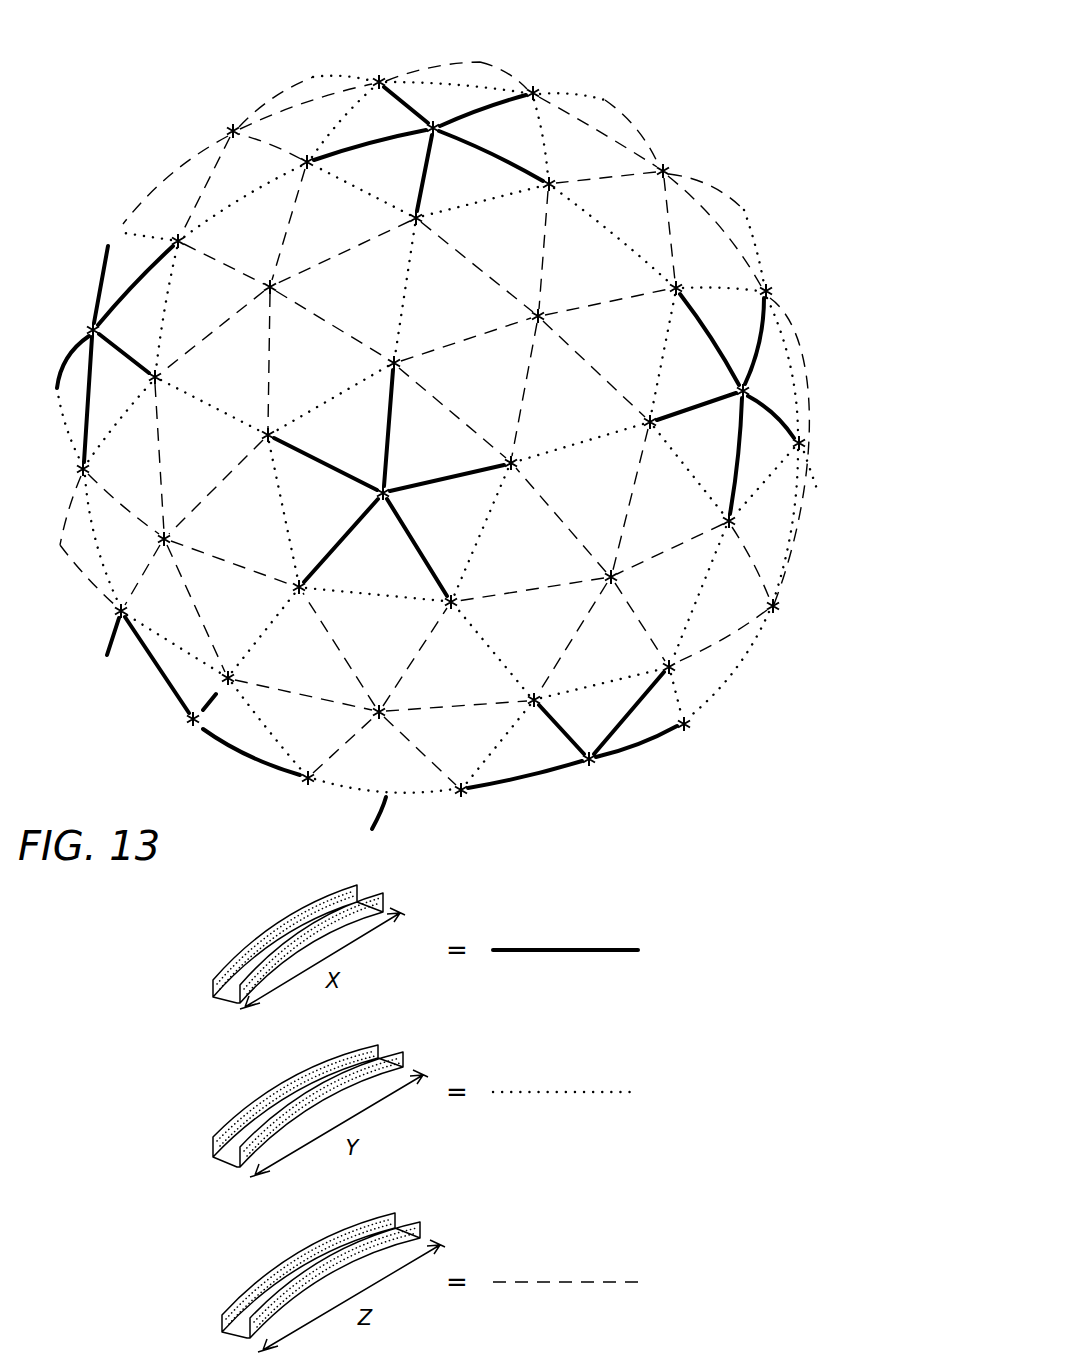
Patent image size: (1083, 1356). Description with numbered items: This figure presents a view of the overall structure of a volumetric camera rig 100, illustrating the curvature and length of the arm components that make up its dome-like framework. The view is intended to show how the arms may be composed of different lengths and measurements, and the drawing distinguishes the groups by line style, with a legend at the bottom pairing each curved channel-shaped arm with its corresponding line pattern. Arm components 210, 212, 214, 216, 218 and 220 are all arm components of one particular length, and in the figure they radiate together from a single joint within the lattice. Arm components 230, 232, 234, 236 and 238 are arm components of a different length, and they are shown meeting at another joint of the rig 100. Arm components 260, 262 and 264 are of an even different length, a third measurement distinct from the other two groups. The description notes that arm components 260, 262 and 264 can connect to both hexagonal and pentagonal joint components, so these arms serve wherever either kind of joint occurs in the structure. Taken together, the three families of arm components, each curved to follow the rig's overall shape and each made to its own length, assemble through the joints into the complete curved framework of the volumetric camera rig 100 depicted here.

The volumetric camera rig 100 is at (719, 64).
The arm component 210 is at (284, 236).
The arm component 212 is at (228, 263).
The arm component 214 is at (208, 337).
The arm component 216 is at (267, 337).
The arm component 218 is at (313, 318).
The arm component 220 is at (309, 266).
The arm component 230 is at (387, 447).
The arm component 232 is at (319, 464).
The arm component 234 is at (343, 543).
The arm component 236 is at (406, 506).
The arm component 238 is at (431, 482).
The arm component 260 is at (257, 640).
The arm component 262 is at (267, 736).
The arm component 264 is at (372, 829).